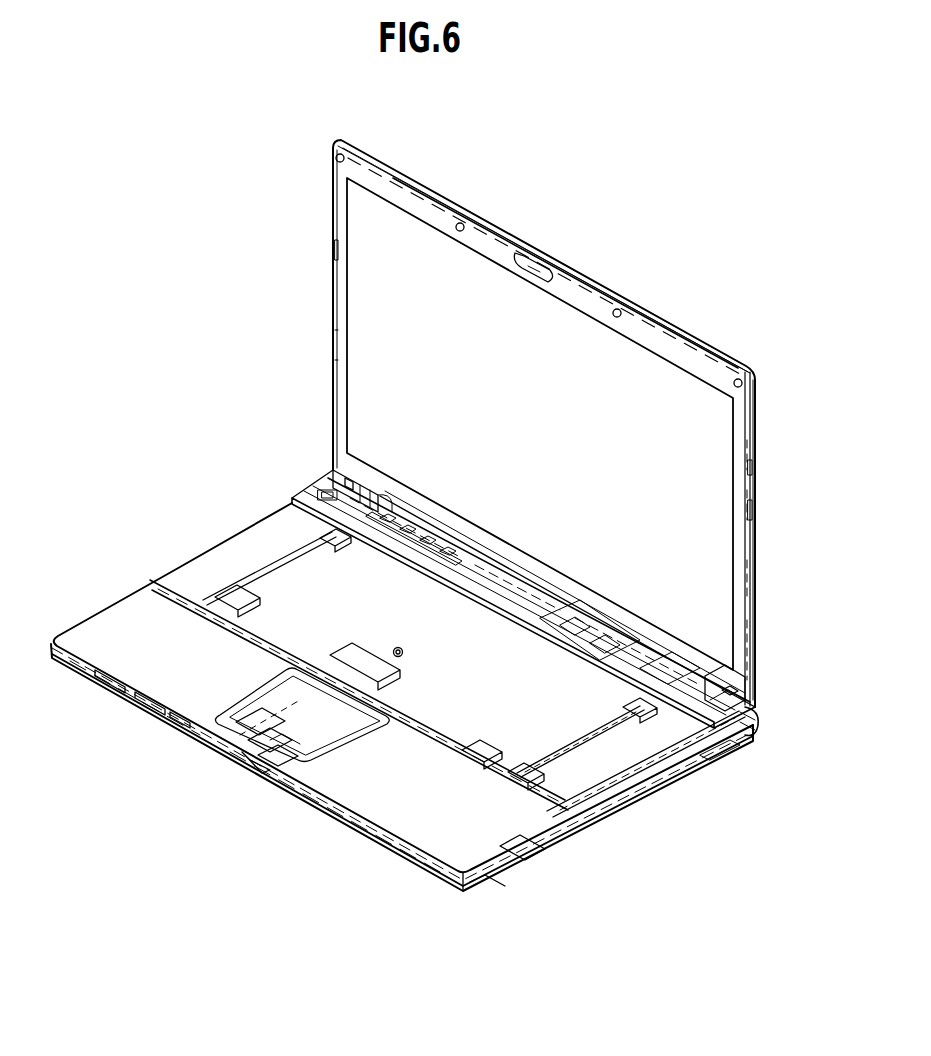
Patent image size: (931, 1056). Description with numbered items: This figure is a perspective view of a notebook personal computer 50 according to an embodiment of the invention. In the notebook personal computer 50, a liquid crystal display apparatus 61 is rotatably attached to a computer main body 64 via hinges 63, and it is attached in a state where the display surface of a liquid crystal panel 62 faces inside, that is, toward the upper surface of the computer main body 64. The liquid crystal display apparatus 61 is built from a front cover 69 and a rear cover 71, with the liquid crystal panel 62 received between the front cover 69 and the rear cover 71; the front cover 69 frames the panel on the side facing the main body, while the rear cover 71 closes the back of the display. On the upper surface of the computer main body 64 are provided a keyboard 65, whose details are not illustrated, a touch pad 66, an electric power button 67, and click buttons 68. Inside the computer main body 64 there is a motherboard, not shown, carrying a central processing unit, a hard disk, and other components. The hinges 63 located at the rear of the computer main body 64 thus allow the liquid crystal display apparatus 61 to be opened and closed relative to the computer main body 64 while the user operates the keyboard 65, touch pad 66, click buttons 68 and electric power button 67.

The notebook personal computer 50 is at (189, 190).
The liquid crystal display apparatus 61 is at (758, 426).
The liquid crystal panel 62 is at (650, 372).
The hinges 63 is at (338, 478).
The computer main body 64 is at (88, 610).
The keyboard 65 is at (578, 740).
The touch pad 66 is at (331, 722).
The electric power button 67 is at (748, 732).
The click buttons 68 is at (255, 765).
The front cover 69 is at (335, 297).
The rear cover 71 is at (757, 545).